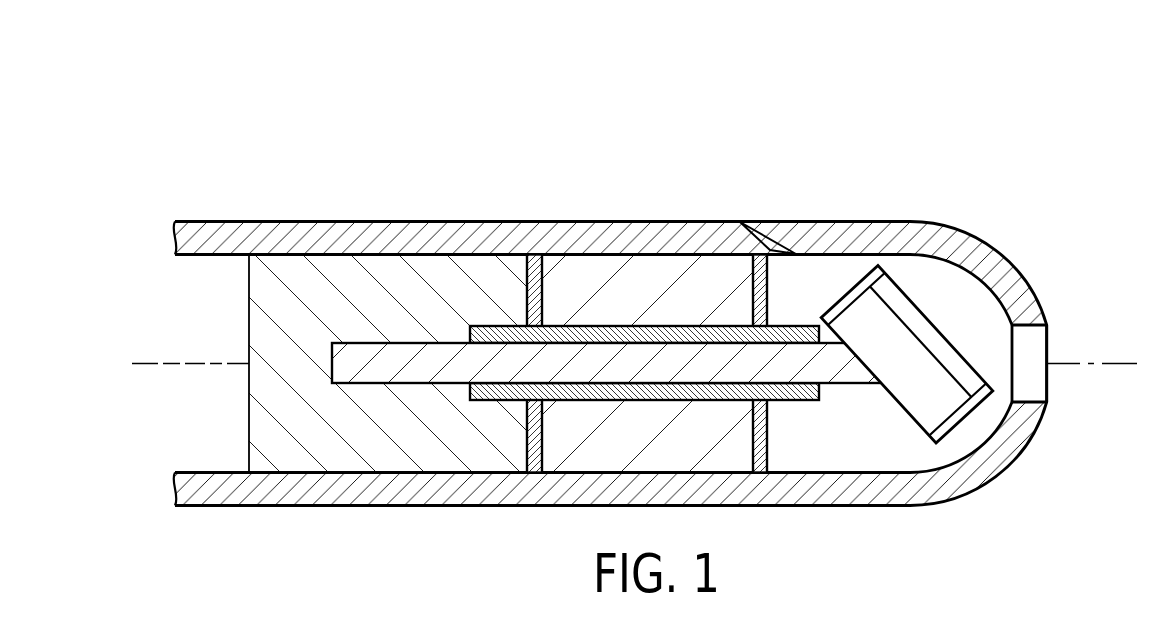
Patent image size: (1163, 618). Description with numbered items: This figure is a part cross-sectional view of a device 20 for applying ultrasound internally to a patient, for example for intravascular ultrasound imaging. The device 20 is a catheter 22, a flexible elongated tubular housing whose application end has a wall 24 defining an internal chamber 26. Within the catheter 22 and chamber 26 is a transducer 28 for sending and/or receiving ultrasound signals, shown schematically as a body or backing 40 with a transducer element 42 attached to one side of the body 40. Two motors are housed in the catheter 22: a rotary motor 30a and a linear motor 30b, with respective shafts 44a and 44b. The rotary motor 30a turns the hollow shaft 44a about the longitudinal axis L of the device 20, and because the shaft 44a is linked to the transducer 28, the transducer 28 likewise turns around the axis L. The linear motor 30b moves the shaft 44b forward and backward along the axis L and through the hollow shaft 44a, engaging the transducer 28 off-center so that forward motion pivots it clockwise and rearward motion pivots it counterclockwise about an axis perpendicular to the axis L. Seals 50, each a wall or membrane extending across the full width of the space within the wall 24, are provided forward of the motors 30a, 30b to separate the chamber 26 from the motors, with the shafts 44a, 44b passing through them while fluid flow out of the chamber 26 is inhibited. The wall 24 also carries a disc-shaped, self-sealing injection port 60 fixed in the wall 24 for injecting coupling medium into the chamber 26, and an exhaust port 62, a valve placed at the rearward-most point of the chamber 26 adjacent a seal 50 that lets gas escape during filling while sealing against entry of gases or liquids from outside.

The device 20 is at (637, 258).
The catheter 22 is at (639, 304).
The wall 24 is at (848, 232).
The internal chamber 26 is at (950, 287).
The transducer 28 is at (863, 310).
The rotary motor 30a is at (648, 272).
The linear motor 30b is at (332, 272).
The body 40 is at (899, 357).
The transducer element 42 is at (942, 345).
The hollow shaft 44a is at (658, 389).
The shaft 44b is at (398, 365).
The seal 50 is at (545, 270).
The injection port 60 is at (1038, 347).
The exhaust port 62 is at (772, 247).
The longitudinal axis L is at (1118, 365).